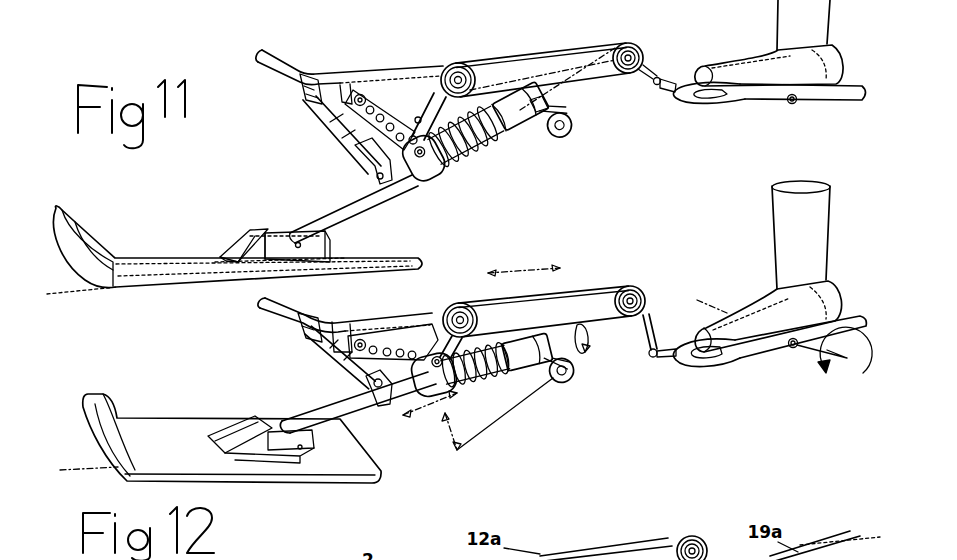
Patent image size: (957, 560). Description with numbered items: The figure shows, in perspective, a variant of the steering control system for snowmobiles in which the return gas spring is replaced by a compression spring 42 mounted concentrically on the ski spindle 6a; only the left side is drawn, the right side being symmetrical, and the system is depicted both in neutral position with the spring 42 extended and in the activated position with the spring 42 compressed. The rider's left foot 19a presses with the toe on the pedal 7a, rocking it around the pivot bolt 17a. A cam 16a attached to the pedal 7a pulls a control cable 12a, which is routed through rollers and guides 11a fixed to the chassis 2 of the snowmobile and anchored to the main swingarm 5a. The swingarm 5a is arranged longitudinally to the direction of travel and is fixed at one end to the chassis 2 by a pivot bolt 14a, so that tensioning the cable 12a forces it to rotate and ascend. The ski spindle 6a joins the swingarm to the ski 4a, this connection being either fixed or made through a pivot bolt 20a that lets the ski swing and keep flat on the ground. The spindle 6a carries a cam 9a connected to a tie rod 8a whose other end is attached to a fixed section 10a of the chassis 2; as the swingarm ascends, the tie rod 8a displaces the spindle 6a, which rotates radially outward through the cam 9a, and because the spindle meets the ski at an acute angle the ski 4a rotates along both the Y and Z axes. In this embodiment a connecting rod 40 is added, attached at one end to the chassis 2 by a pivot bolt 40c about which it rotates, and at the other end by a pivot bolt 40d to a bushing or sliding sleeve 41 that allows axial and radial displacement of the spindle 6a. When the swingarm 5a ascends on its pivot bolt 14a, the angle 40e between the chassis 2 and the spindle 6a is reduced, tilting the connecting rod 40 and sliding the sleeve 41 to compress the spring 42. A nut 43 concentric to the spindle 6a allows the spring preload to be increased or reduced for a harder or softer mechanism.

In FIG. 11, the chassis 2 is at (258, 57).
In FIG. 12, the chassis 2 is at (278, 310).
In FIG. 11, the ski 4a is at (200, 268).
In FIG. 12, the ski 4a is at (187, 437).
In FIG. 11, the main swingarm 5a is at (538, 126).
In FIG. 12, the main swingarm 5a is at (540, 383).
In FIG. 11, the ski spindle 6a is at (335, 212).
In FIG. 12, the ski spindle 6a is at (343, 414).
In FIG. 11, the pedal 7a is at (742, 97).
In FIG. 12, the pedal 7a is at (745, 353).
In FIG. 11, the tie rod 8a is at (318, 127).
In FIG. 12, the tie rod 8a is at (335, 354).
In FIG. 11, the cam 9a is at (405, 160).
In FIG. 12, the cam 9a is at (385, 406).
In FIG. 11, the fixed section 10a is at (300, 90).
In FIG. 12, the fixed section 10a is at (300, 330).
In FIG. 11, the rollers and guides 11a is at (636, 44).
In FIG. 12, the rollers and guides 11a is at (636, 287).
In FIG. 11, the control cable 12a is at (508, 48).
In FIG. 12, the control cable 12a is at (488, 300).
In FIG. 11, the pivot bolt 14a is at (576, 122).
In FIG. 12, the pivot bolt 14a is at (575, 376).
In FIG. 11, the cam 16a is at (668, 88).
In FIG. 12, the cam 16a is at (667, 360).
In FIG. 11, the pivot bolt 17a is at (800, 103).
In FIG. 12, the pivot bolt 17a is at (797, 347).
In FIG. 11, the left foot 19a is at (757, 76).
In FIG. 12, the left foot 19a is at (765, 322).
In FIG. 11, the pivot bolt 20a is at (280, 245).
In FIG. 12, the pivot bolt 20a is at (304, 463).
In FIG. 11, the connecting rod 40 is at (380, 120).
In FIG. 12, the connecting rod 40 is at (395, 343).
In FIG. 11, the pivot bolt 40c is at (360, 94).
In FIG. 12, the pivot bolt 40c is at (360, 339).
In FIG. 11, the pivot bolt 40d is at (430, 138).
In FIG. 11, the angle 40e is at (470, 100).
In FIG. 11, the bushing or sliding sleeve 41 is at (418, 166).
In FIG. 12, the bushing or sliding sleeve 41 is at (434, 374).
In FIG. 11, the compression spring 42 is at (462, 158).
In FIG. 11, the nut 43 is at (548, 104).